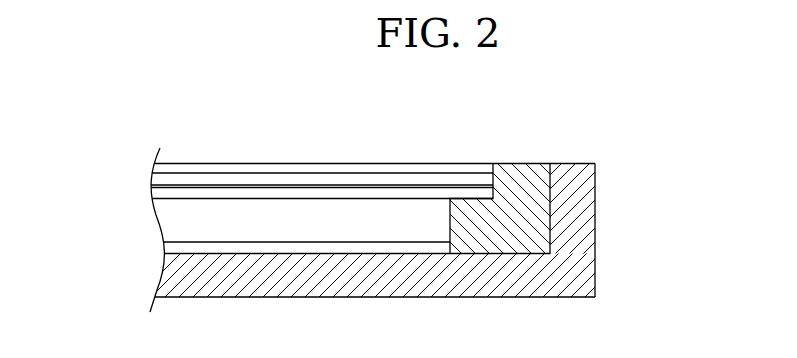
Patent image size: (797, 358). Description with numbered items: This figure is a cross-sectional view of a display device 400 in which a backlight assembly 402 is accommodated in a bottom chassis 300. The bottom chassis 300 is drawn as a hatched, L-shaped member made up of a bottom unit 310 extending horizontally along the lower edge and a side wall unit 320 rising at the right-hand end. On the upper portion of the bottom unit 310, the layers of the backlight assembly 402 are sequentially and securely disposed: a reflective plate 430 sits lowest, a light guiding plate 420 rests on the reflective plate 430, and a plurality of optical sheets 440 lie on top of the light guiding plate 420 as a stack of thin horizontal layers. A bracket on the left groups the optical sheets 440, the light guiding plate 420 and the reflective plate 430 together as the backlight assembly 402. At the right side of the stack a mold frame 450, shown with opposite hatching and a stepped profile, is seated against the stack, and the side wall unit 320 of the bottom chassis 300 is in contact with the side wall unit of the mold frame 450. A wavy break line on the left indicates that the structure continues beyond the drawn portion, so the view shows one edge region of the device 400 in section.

The display device 400 is at (375, 97).
The backlight assembly 402 is at (67, 180).
The optical sheets 440 is at (152, 193).
The light guiding plate 420 is at (158, 225).
The reflective plate 430 is at (160, 247).
The mold frame 450 is at (529, 172).
The side wall unit 320 is at (595, 222).
The bottom unit 310 is at (520, 289).
The bottom chassis 300 is at (684, 227).